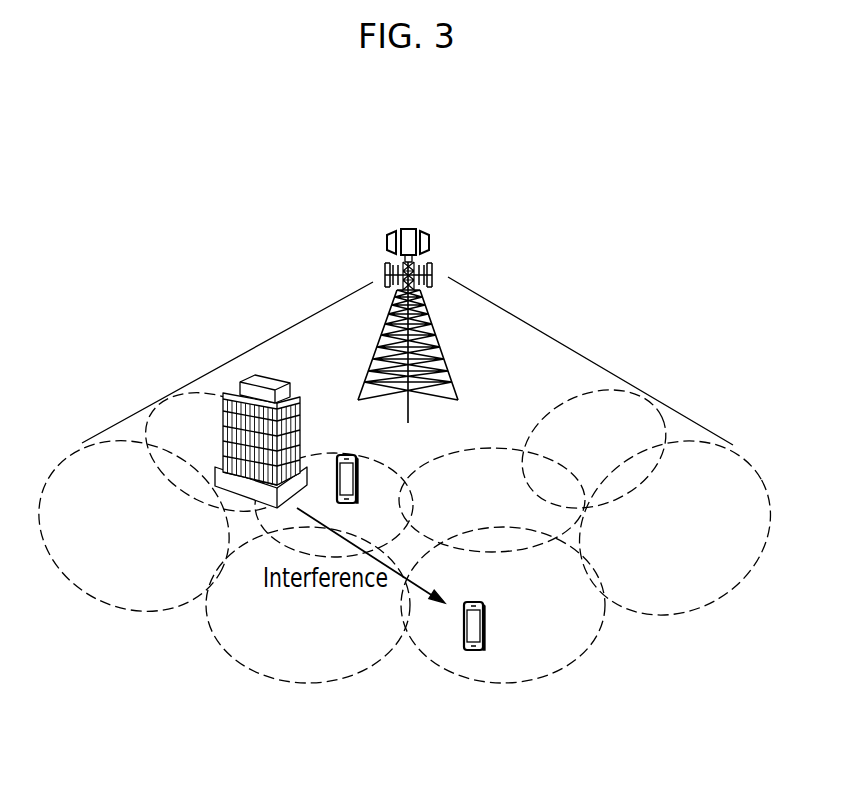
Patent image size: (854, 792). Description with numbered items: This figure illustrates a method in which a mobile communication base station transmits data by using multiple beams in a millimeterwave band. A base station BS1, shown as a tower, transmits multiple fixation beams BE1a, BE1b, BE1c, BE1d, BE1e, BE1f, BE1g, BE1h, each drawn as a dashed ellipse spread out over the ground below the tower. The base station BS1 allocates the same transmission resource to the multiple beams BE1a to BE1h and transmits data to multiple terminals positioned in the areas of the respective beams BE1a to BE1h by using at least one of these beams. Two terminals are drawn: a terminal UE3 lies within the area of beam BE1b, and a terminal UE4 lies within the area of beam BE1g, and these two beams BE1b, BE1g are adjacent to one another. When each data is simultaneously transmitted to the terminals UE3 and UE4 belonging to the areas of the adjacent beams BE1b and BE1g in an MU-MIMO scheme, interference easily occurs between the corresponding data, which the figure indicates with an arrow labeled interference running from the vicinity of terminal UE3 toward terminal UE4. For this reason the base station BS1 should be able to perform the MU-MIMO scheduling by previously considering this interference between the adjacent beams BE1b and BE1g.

The base station BS1 is at (383, 333).
The terminal UE3 is at (356, 494).
The terminal UE4 is at (497, 629).
The fixation beam BE1a is at (193, 397).
The fixation beam BE1b is at (333, 452).
The fixation beam BE1c is at (488, 452).
The fixation beam BE1d is at (572, 403).
The fixation beam BE1e is at (97, 442).
The fixation beam BE1f is at (307, 685).
The fixation beam BE1g is at (503, 685).
The fixation beam BE1h is at (700, 442).